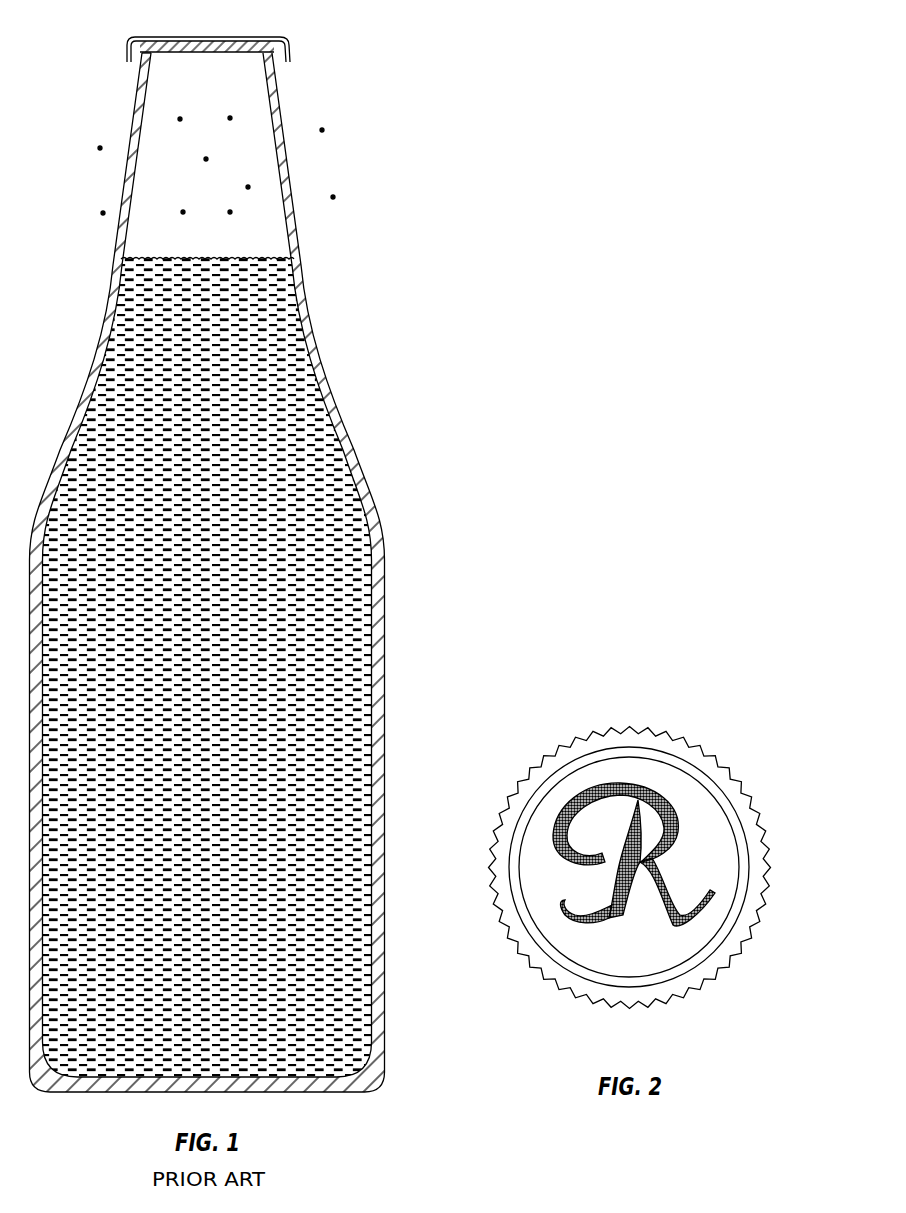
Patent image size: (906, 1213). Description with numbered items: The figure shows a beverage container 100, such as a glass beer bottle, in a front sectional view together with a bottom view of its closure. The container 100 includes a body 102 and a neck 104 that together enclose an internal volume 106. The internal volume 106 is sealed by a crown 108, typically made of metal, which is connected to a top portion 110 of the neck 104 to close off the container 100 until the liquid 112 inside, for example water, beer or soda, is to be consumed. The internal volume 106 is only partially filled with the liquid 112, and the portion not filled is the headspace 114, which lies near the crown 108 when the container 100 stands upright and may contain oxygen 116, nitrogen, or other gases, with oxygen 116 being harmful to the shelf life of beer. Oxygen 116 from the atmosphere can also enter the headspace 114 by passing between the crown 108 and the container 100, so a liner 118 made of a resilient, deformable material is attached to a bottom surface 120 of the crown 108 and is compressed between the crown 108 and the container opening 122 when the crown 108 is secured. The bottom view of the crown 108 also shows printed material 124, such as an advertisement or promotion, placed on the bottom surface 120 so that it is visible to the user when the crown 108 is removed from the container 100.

In FIG. 1, the beverage container 100 is at (412, 316).
In FIG. 1, the body 102 is at (385, 675).
In FIG. 1, the neck 104 is at (306, 302).
In FIG. 1, the internal volume 106 is at (315, 478).
In FIG. 1, the crown 108 is at (256, 37).
In FIG. 2, the crown 108 is at (771, 884).
In FIG. 1, the top portion 110 is at (305, 64).
In FIG. 1, the liquid 112 is at (338, 578).
In FIG. 1, the headspace 114 is at (268, 210).
In FIG. 1, the oxygen 116 is at (370, 183).
In FIG. 1, the liner 118 is at (181, 53).
In FIG. 2, the liner 118 is at (737, 812).
In FIG. 1, the bottom surface 120 is at (232, 53).
In FIG. 2, the bottom surface 120 is at (614, 772).
In FIG. 1, the container opening 122 is at (152, 56).
In FIG. 2, the printed material 124 is at (677, 806).